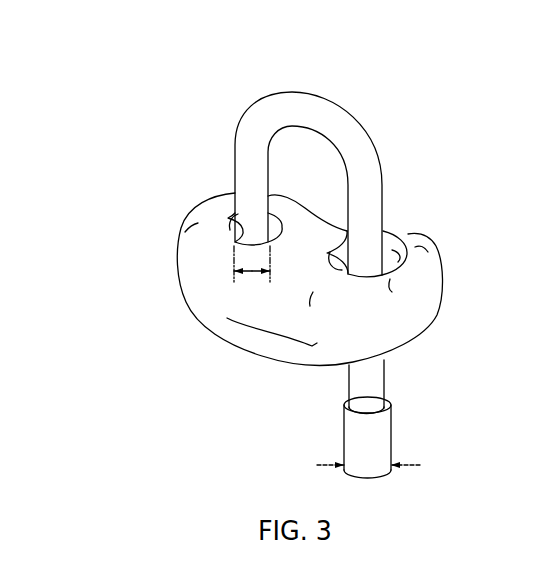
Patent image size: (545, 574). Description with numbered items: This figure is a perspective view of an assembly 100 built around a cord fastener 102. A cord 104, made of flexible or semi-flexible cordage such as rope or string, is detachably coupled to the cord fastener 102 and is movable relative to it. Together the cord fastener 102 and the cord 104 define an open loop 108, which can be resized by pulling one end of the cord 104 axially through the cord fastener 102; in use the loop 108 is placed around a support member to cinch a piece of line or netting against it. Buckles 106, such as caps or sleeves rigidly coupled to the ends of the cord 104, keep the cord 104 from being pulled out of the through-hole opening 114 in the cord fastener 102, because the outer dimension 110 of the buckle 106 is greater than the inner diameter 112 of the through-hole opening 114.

The assembly 100 is at (195, 198).
The cord fastener 102 is at (262, 325).
The cord 104 is at (338, 132).
The buckle 106 is at (392, 445).
The open loop 108 is at (312, 172).
The outer dimension 110 is at (317, 465).
The inner diameter 112 is at (248, 274).
The through-hole opening 114 is at (228, 219).